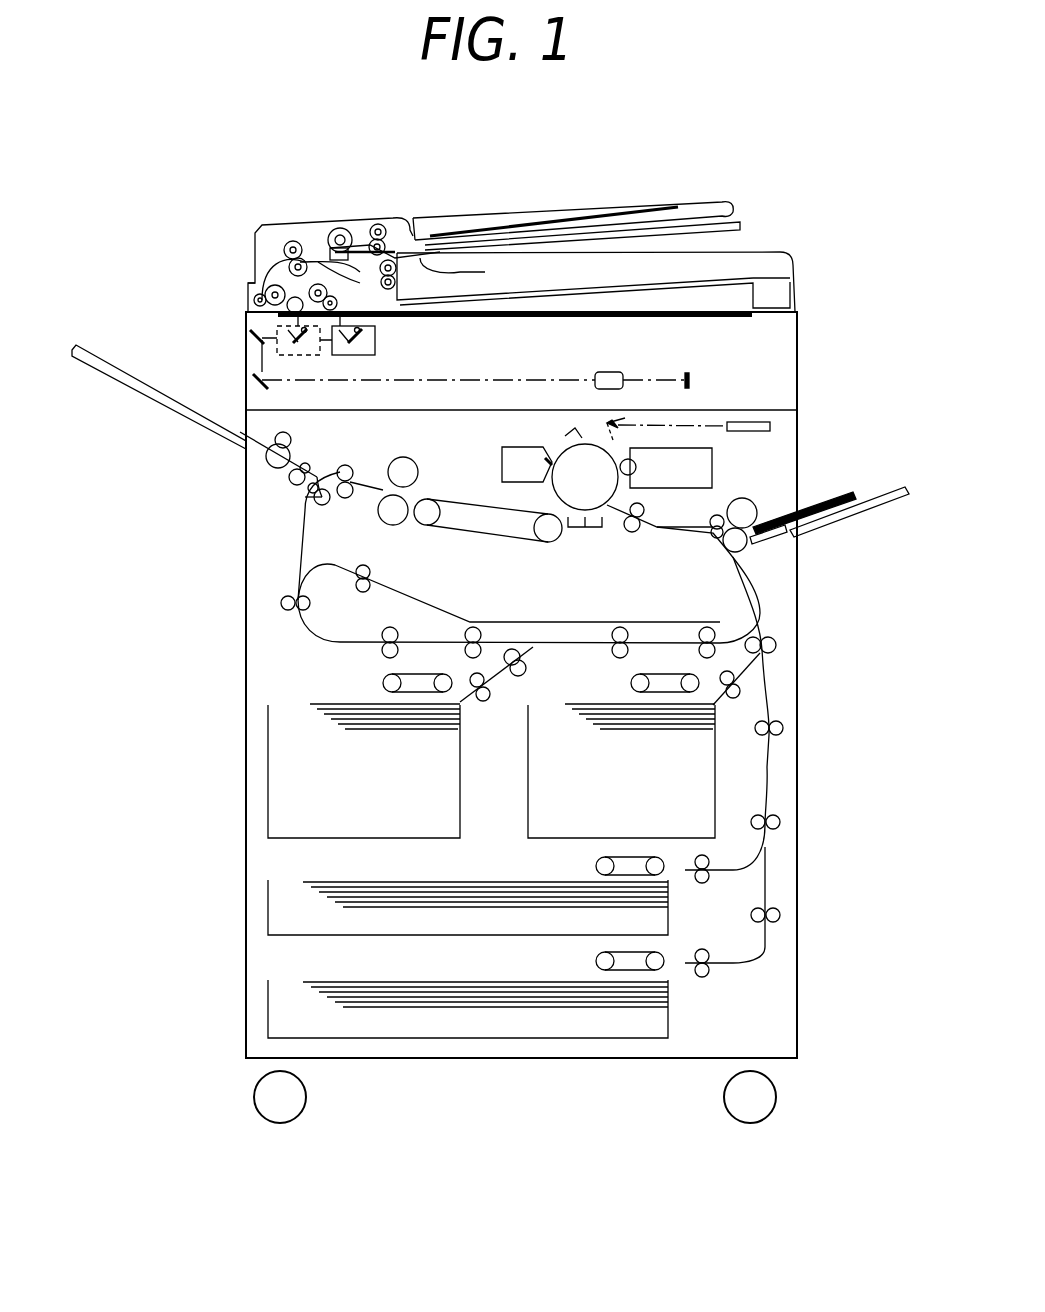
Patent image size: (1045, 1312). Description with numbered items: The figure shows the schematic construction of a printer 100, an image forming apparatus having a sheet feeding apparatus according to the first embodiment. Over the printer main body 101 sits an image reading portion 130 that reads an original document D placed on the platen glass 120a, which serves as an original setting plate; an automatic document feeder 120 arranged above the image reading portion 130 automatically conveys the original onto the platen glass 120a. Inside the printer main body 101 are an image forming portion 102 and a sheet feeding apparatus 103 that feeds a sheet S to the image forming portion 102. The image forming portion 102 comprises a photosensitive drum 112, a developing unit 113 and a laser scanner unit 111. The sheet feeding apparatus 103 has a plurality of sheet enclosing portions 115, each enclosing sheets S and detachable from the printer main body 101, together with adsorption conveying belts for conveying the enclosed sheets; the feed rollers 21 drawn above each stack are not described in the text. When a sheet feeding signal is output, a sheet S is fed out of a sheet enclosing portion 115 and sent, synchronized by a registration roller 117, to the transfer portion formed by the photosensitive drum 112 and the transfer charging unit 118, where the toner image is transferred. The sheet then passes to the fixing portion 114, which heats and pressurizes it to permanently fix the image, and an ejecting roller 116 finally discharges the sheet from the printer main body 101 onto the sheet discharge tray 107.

The printer 100 is at (812, 312).
The printer main body 101 is at (246, 584).
The image forming portion 102 is at (770, 455).
The sheet feeding apparatus 103 is at (780, 757).
The sheet discharge tray 107 is at (93, 378).
The laser scanner unit 111 is at (757, 413).
The photosensitive drum 112 is at (557, 455).
The developing unit 113 is at (712, 477).
The fixing portion 114 is at (397, 522).
The sheet enclosing portion 115 is at (268, 780).
The ejecting roller 116 is at (270, 460).
The registration roller 117 is at (642, 525).
The transfer charging unit 118 is at (600, 532).
The automatic document feeder 120 is at (700, 198).
The platen glass 120a is at (720, 318).
The image reading portion 130 is at (797, 350).
The sheet feed roller 21 is at (630, 683).
The sheet S is at (335, 700).
The original document D is at (577, 218).